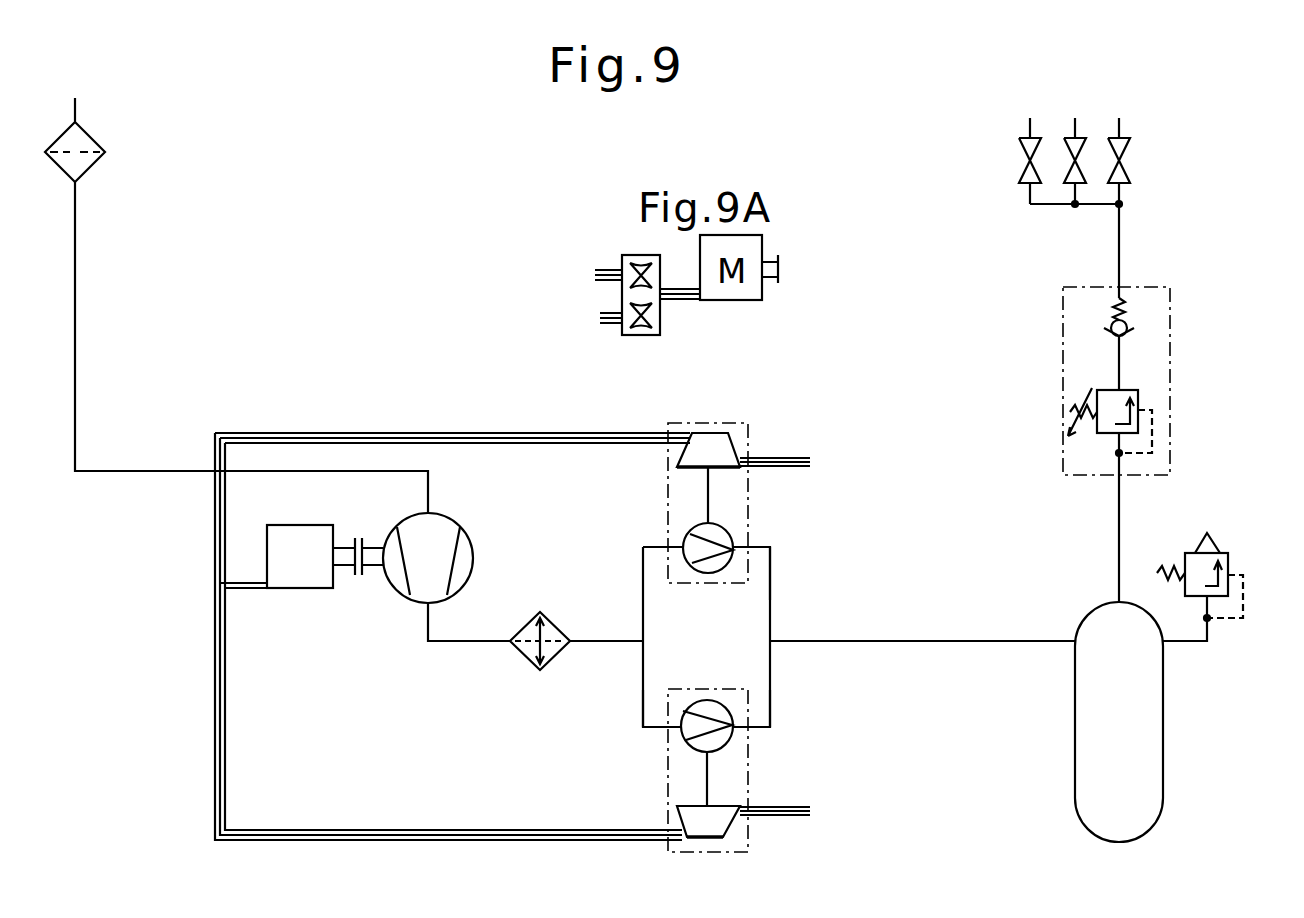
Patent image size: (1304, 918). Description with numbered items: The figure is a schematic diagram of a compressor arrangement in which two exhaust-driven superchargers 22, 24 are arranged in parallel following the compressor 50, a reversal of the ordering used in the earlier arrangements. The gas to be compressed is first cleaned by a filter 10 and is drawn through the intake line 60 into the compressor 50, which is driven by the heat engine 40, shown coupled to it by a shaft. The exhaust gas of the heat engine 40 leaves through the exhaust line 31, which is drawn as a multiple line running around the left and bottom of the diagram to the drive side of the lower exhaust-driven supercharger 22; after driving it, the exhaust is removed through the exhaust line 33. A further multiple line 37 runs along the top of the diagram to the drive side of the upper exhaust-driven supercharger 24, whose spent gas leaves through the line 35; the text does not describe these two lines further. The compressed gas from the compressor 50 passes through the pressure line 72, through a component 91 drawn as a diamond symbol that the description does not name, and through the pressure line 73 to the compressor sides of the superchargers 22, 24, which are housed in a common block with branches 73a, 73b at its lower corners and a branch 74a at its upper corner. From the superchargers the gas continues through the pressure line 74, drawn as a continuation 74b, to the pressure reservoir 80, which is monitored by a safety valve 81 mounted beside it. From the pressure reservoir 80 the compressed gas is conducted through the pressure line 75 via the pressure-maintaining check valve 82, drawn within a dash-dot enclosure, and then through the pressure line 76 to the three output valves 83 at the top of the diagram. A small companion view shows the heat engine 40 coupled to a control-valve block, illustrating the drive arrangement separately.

The filter 10 is at (105, 157).
The intake line 60 is at (75, 230).
The air supply line 37 is at (457, 433).
The exhaust line 31 is at (217, 775).
The heat engine 40 is at (300, 525).
The compressor 50 is at (473, 553).
The pressure line 72 is at (463, 641).
The filter 91 is at (540, 612).
The pressure line 73 is at (605, 641).
The pressure line 74 is at (643, 567).
The heat exchanger section 74a is at (772, 578).
The line 74b is at (815, 641).
The line 73a is at (643, 700).
The line 73b is at (770, 700).
The exhaust-driven supercharger 24 is at (712, 430).
The outlet line 35 is at (770, 456).
The exhaust-driven supercharger 22 is at (697, 840).
The exhaust line 33 is at (773, 803).
The output valves 83 is at (1128, 157).
The pressure line 76 is at (1119, 230).
The pressure-maintaining check valve 82 is at (1138, 396).
The pressure line 75 is at (1119, 520).
The pressure reservoir 80 is at (1163, 737).
The safety valve 81 is at (1230, 583).